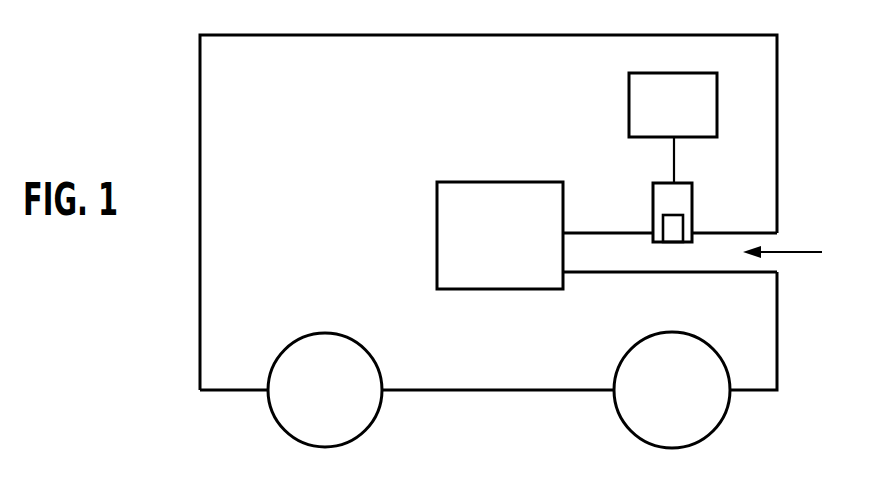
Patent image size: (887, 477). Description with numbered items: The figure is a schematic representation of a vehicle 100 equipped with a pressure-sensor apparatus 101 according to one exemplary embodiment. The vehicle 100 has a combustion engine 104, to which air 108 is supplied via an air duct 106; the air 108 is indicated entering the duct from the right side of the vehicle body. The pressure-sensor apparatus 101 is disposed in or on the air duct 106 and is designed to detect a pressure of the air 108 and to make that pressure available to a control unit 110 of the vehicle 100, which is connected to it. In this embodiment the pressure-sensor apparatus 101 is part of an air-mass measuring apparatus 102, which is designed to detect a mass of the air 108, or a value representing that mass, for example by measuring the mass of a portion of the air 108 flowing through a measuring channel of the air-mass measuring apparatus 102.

The vehicle 100 is at (752, 69).
The control unit 110 is at (688, 102).
The air-mass measuring apparatus 102 is at (675, 195).
The pressure-sensor apparatus 101 is at (672, 228).
The combustion engine 104 is at (506, 249).
The air duct 106 is at (607, 251).
The air 108 is at (790, 253).